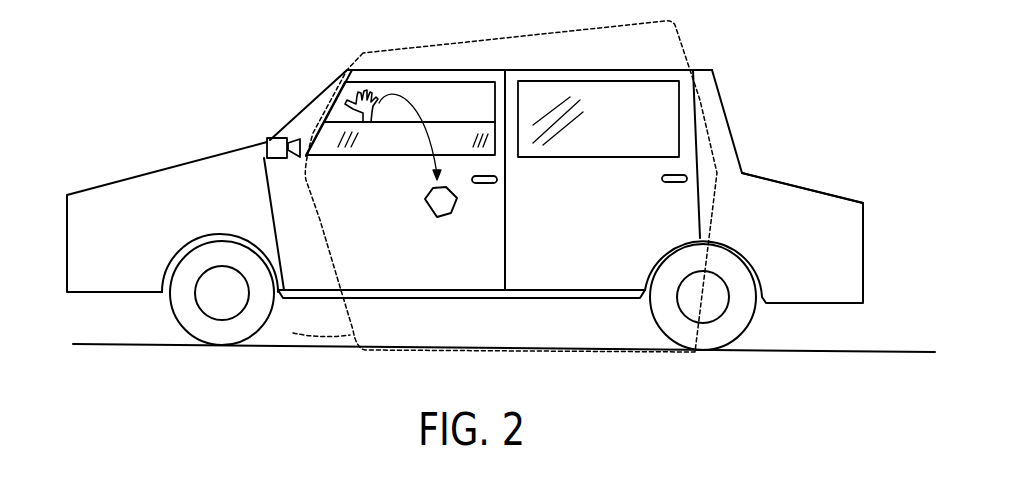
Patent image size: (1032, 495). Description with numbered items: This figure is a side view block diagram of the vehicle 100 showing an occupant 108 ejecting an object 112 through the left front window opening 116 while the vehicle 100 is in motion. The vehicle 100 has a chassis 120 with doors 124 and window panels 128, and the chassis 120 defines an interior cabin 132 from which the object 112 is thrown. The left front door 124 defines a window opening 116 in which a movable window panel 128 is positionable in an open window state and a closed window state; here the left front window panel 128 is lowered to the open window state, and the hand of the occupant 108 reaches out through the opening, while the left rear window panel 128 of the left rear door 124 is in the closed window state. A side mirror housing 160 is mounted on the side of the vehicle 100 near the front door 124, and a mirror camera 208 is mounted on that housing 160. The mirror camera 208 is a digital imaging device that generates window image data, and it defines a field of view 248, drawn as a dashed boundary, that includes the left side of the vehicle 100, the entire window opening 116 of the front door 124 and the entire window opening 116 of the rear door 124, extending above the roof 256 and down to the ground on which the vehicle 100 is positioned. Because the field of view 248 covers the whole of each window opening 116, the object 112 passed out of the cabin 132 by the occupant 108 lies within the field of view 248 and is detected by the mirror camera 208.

The vehicle 100 is at (136, 120).
The occupant 108 is at (356, 97).
The object 112 is at (427, 207).
The window opening 116 is at (461, 90).
The chassis 120 is at (797, 180).
The door 124 is at (475, 263).
The window panel 128 is at (425, 150).
The interior cabin 132 is at (426, 98).
The side mirror housing 160 is at (268, 145).
The mirror camera 208 is at (298, 140).
The field of view 248 is at (496, 186).
The roof 256 is at (705, 68).